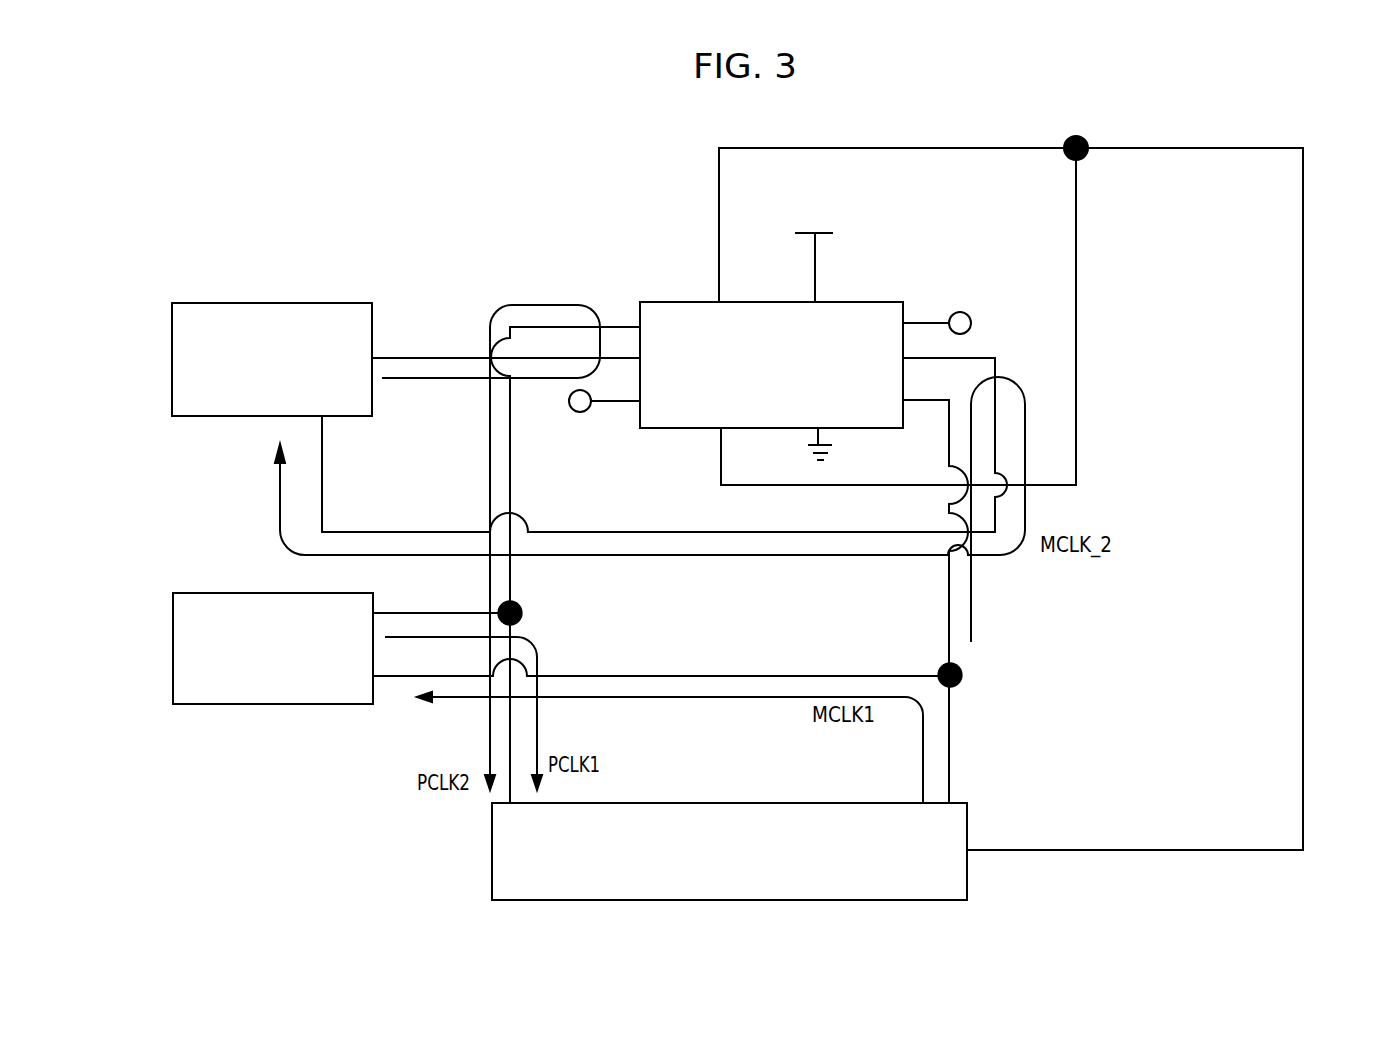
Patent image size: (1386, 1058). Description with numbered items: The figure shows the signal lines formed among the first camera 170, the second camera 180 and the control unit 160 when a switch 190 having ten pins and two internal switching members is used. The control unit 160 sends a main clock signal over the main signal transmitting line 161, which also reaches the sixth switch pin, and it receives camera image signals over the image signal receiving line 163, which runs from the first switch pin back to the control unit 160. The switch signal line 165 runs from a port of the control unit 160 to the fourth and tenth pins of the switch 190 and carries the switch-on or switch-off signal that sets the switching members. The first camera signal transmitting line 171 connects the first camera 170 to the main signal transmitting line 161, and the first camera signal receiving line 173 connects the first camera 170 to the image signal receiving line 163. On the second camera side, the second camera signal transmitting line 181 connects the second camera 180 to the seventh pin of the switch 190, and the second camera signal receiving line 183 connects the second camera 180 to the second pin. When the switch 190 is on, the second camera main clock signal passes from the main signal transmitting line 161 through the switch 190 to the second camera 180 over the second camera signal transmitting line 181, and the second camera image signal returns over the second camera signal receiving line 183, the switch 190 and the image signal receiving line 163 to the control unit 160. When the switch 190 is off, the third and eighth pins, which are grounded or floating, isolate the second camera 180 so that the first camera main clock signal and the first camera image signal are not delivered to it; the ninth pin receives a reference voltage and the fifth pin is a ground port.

The control unit 160 is at (492, 852).
The main signal transmitting line 161 is at (950, 652).
The image signal receiving line 163 is at (512, 733).
The switch signal line 165 is at (1305, 725).
The first camera 170 is at (173, 650).
The first camera signal transmitting line 171 is at (403, 680).
The first camera signal receiving line 173 is at (473, 612).
The second camera 180 is at (172, 360).
The second camera signal transmitting line 181 is at (407, 531).
The second camera signal receiving line 183 is at (412, 356).
The switch 190 is at (652, 302).